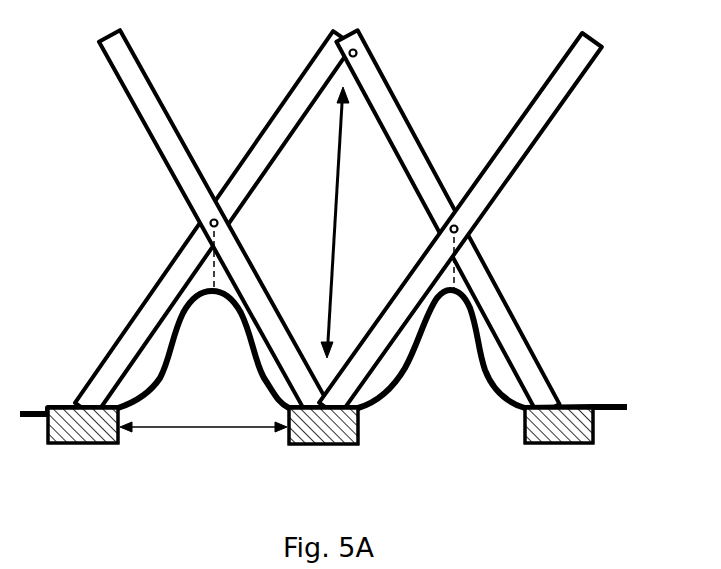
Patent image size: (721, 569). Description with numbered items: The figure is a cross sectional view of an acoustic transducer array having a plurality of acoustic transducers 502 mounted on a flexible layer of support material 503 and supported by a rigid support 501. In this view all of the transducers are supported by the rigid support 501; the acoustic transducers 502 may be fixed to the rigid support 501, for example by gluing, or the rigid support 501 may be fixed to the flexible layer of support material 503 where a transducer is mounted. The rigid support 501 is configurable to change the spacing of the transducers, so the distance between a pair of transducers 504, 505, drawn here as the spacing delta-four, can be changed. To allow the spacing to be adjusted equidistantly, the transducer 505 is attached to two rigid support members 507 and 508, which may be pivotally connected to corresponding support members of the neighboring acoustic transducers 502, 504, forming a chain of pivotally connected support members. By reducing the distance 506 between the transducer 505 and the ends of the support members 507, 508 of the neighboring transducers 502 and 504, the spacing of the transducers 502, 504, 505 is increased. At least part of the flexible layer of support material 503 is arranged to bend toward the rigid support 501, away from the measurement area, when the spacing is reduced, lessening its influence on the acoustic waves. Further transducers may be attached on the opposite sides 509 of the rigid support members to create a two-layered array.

The rigid support 501 is at (355, 273).
The acoustic transducer 502 is at (593, 428).
The flexible layer of support material 503 is at (480, 365).
The transducer 504 is at (80, 445).
The transducer 505 is at (325, 445).
The distance 506 is at (335, 243).
The rigid support member 507 is at (283, 115).
The rigid support member 508 is at (408, 132).
The opposite sides of the rigid support members 509 is at (598, 38).